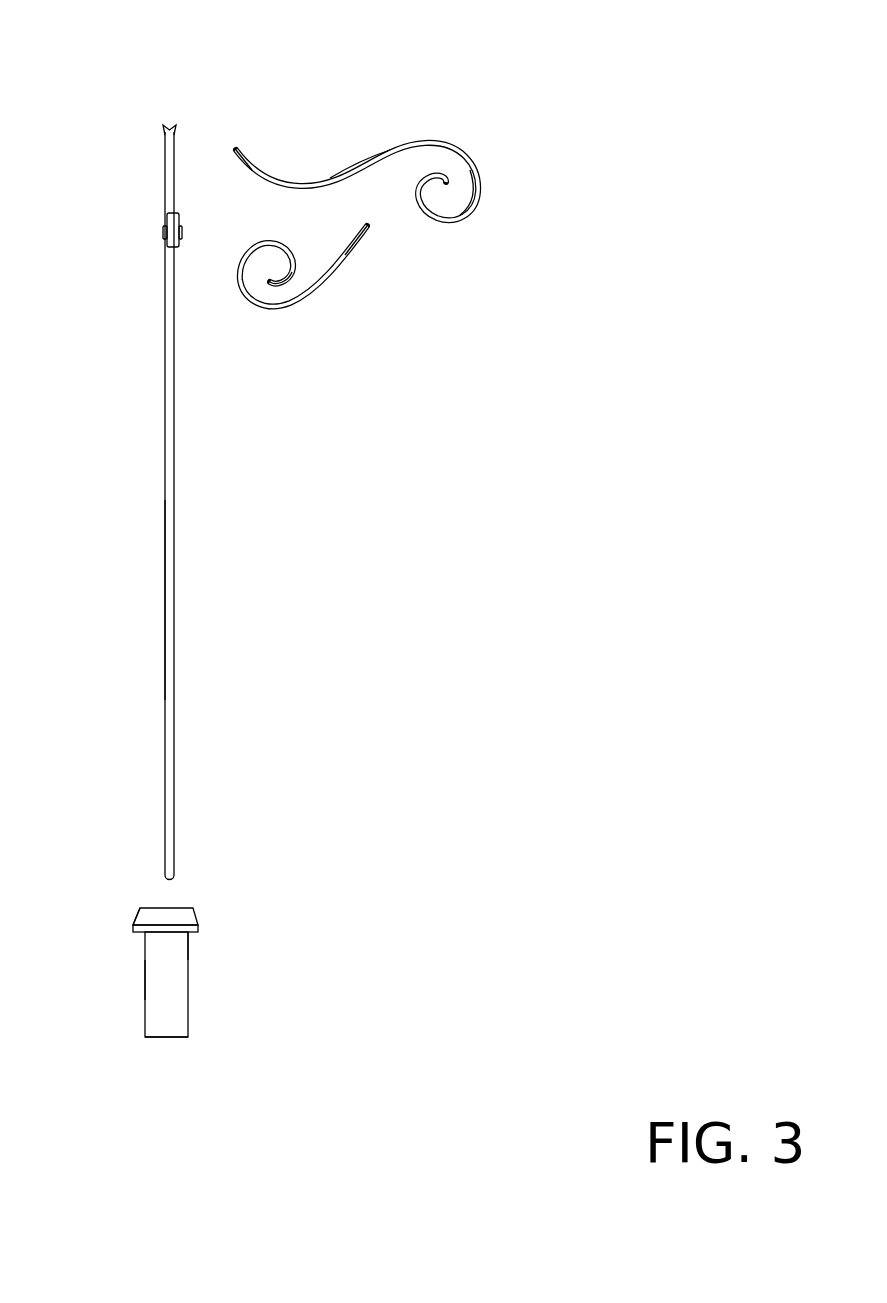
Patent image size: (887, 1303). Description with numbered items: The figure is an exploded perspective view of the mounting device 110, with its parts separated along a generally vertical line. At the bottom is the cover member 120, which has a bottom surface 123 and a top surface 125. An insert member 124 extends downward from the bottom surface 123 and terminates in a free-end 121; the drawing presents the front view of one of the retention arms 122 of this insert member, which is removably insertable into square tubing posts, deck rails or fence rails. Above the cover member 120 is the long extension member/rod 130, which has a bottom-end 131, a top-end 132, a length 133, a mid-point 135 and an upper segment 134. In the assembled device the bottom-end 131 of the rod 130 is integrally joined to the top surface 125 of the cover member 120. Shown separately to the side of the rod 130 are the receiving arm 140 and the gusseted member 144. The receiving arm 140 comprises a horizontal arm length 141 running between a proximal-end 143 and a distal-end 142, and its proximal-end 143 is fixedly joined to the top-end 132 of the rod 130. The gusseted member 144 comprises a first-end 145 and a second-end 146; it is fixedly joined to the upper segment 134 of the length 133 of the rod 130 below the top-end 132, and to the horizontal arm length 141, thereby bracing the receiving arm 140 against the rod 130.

The mounting device 110 is at (580, 127).
The cover member 120 is at (179, 912).
The free-end 121 is at (174, 1038).
The retention arm 122 is at (171, 977).
The bottom surface 123 is at (196, 938).
The insert member 124 is at (142, 960).
The top surface 125 is at (136, 919).
The extension member/rod 130 is at (171, 488).
The bottom-end 131 is at (169, 873).
The top-end 132 is at (171, 124).
The length 133 is at (171, 581).
The upper segment 134 is at (169, 203).
The mid-point 135 is at (169, 262).
The receiving arm 140 is at (279, 180).
The horizontal arm length 141 is at (353, 169).
The distal-end 142 is at (449, 179).
The proximal-end 143 is at (235, 147).
The gusseted member 144 is at (304, 304).
The first-end 145 is at (376, 240).
The second-end 146 is at (266, 301).